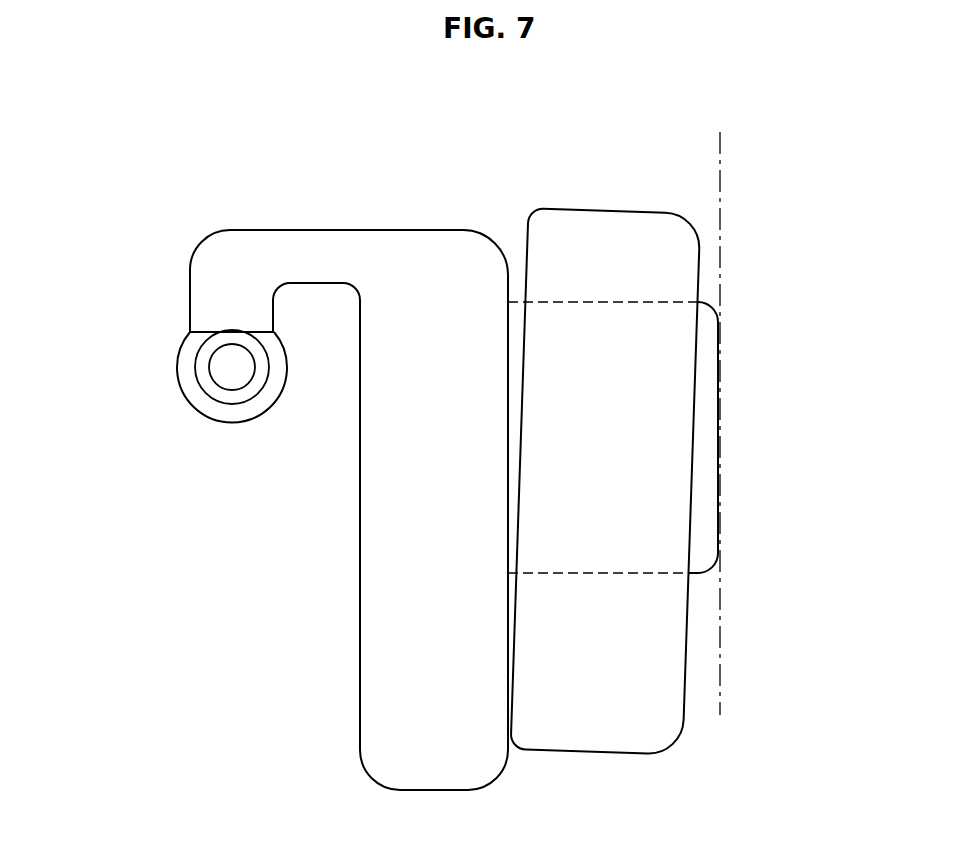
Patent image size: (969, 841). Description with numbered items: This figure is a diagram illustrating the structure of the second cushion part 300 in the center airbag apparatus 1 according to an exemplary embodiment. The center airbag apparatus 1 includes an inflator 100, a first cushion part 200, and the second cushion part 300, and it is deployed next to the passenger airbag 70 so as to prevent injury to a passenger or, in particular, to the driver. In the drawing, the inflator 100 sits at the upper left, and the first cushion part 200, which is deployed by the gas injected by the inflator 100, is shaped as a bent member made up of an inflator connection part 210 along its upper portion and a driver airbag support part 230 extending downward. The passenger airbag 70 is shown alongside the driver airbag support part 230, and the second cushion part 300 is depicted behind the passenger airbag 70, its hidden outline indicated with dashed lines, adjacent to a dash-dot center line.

The center airbag apparatus 1 is at (168, 218).
The first cushion part 200 is at (447, 147).
The inflator connection part 210 is at (265, 258).
The driver airbag support part 230 is at (440, 415).
The inflator 100 is at (212, 403).
The passenger airbag 70 is at (572, 230).
The second cushion part 300 is at (702, 548).